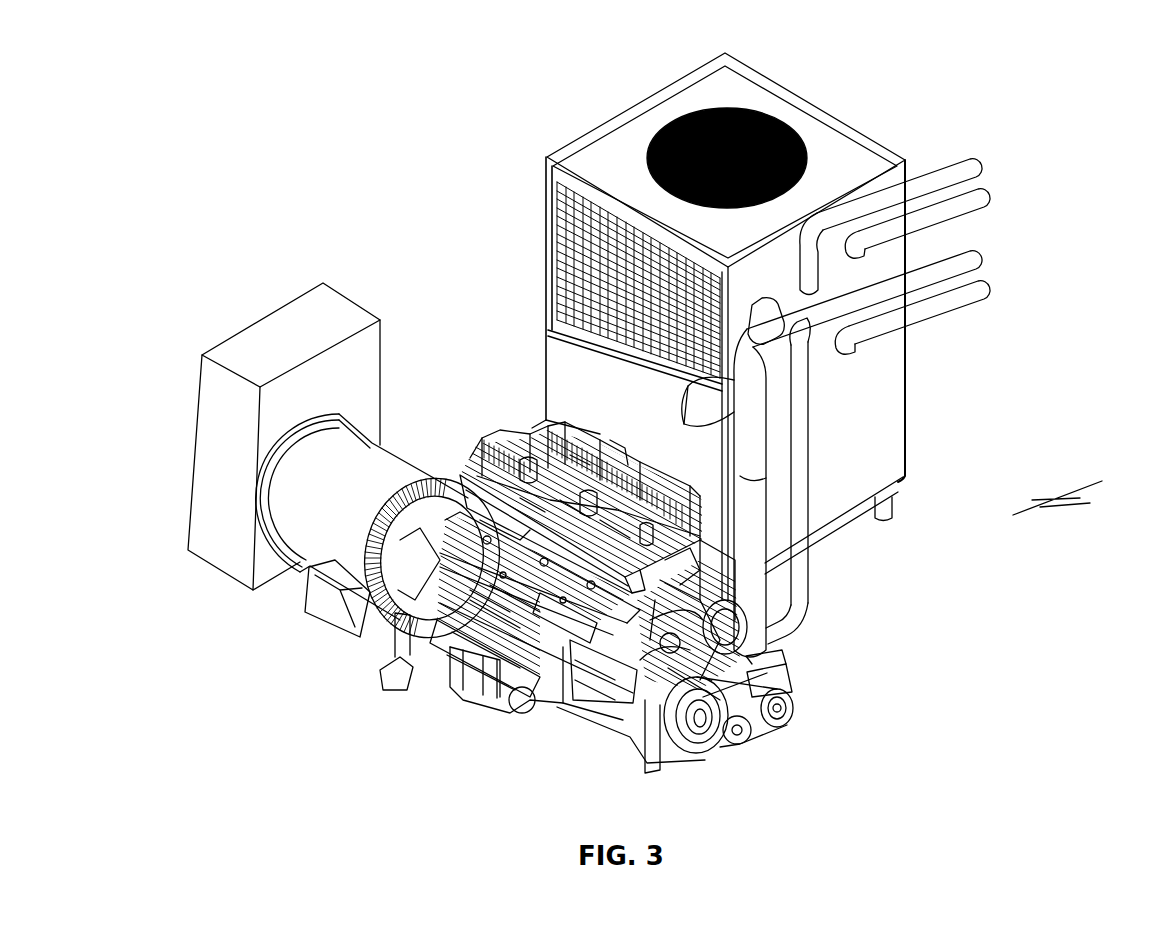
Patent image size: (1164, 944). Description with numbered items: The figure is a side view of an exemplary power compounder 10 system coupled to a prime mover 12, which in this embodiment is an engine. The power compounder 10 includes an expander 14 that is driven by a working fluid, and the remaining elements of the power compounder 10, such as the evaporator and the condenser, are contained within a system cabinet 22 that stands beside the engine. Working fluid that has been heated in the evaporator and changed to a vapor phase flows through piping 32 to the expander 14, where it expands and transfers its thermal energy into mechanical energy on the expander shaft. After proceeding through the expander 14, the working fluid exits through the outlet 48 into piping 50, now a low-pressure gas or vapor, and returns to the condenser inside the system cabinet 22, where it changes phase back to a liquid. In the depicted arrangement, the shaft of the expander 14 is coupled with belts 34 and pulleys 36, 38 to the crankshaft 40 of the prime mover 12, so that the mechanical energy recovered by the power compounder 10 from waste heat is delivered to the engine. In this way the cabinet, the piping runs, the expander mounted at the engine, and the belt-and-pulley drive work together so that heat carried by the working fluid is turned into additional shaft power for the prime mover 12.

The power compounder 10 is at (1073, 492).
The prime mover 12 is at (402, 635).
The expander 14 is at (778, 670).
The system cabinet 22 is at (827, 155).
The piping 32 is at (808, 558).
The belts 34 is at (753, 726).
The pulley 36 is at (790, 712).
The pulley 38 is at (700, 745).
The crankshaft 40 is at (640, 752).
The outlet 48 is at (777, 665).
The piping 50 is at (752, 468).